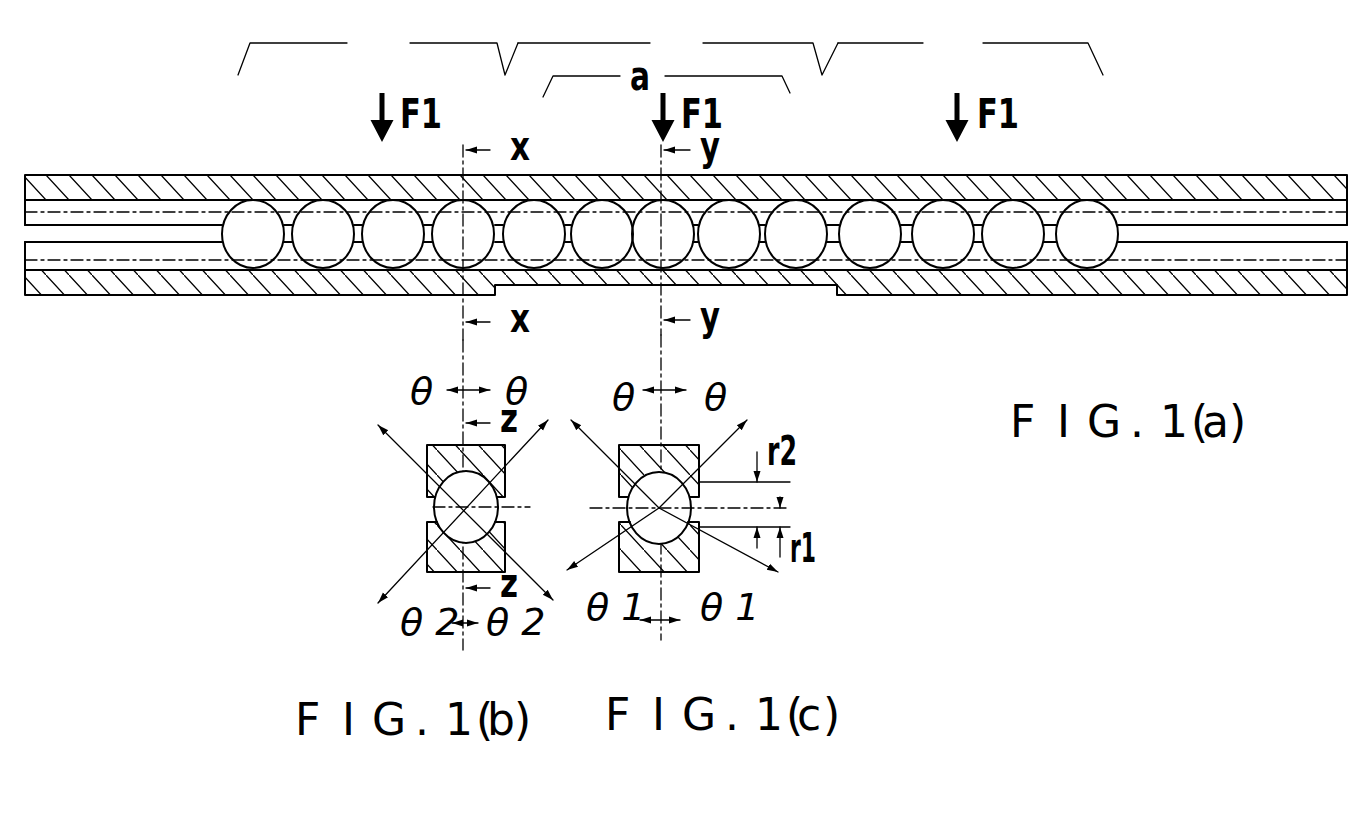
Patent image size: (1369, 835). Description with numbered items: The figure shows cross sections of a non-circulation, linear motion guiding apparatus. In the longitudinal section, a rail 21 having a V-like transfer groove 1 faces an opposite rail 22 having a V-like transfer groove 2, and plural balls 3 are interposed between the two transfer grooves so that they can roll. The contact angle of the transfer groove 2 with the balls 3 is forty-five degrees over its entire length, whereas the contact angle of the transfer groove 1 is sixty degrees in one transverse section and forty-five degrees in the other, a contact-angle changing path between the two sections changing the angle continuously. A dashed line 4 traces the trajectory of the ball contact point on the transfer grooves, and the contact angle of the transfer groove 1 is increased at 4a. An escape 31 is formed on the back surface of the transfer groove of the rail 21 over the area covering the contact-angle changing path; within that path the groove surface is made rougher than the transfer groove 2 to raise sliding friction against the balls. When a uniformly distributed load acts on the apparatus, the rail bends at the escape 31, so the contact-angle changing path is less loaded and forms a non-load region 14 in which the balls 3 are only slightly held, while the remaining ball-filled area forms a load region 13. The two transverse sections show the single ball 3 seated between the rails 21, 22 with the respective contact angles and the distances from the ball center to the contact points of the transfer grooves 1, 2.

In FIG. 1A, the transfer groove 1 is at (355, 267).
In FIG. 1B, the transfer groove 1 is at (493, 531).
In FIG. 1C, the transfer groove 1 is at (622, 527).
In FIG. 1A, the transfer groove 2 is at (283, 205).
In FIG. 1B, the transfer groove 2 is at (500, 487).
In FIG. 1C, the transfer groove 2 is at (630, 487).
In FIG. 1A, the balls 3 is at (945, 237).
In FIG. 1B, the balls 3 is at (447, 508).
In FIG. 1C, the balls 3 is at (659, 508).
In FIG. 1A, the dashed line 4 is at (1145, 210).
In FIG. 1A, the contact-angle increase point 4a is at (670, 247).
In FIG. 1A, the load region 13 is at (670, 46).
In FIG. 1A, the non-load region 14 is at (678, 56).
In FIG. 1A, the rail 21 is at (283, 288).
In FIG. 1B, the rail 21 is at (443, 552).
In FIG. 1C, the rail 21 is at (659, 547).
In FIG. 1A, the rail 22 is at (368, 185).
In FIG. 1B, the rail 22 is at (437, 455).
In FIG. 1C, the rail 22 is at (659, 471).
In FIG. 1A, the escape 31 is at (763, 297).